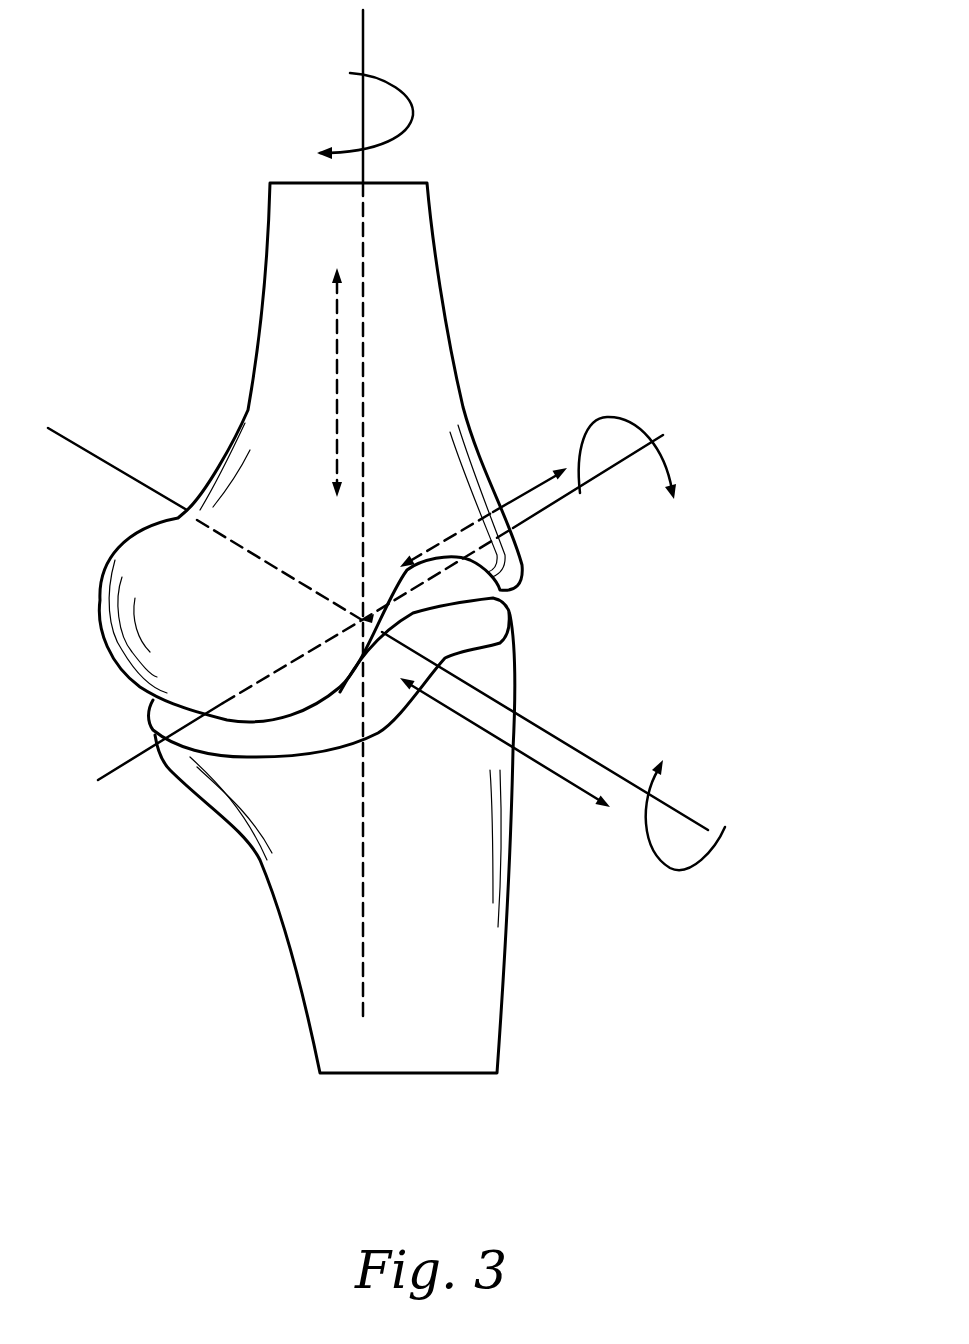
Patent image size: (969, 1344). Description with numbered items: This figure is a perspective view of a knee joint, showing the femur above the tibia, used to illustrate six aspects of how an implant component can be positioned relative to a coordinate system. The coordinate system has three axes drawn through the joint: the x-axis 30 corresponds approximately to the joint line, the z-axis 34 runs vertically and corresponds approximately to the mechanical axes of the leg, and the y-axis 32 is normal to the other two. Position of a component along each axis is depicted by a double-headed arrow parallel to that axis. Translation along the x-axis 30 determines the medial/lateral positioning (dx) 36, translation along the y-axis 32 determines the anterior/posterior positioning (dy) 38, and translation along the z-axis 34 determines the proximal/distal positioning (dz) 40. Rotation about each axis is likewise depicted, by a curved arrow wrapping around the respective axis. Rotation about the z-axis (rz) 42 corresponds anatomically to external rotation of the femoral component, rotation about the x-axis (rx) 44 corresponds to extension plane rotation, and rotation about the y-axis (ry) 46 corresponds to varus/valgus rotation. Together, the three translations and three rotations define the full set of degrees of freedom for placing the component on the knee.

The x-axis 30 is at (172, 845).
The y-axis 32 is at (758, 766).
The z-axis 34 is at (470, 32).
The medial/lateral positioning (dx) 36 is at (564, 462).
The anterior/posterior positioning (dy) 38 is at (612, 902).
The proximal/distal positioning (dz) 40 is at (337, 383).
The rotation about the z-axis (rz) 42 is at (490, 116).
The rotation about the x-axis (rx) 44 is at (673, 360).
The rotation about the y-axis (ry) 46 is at (752, 915).